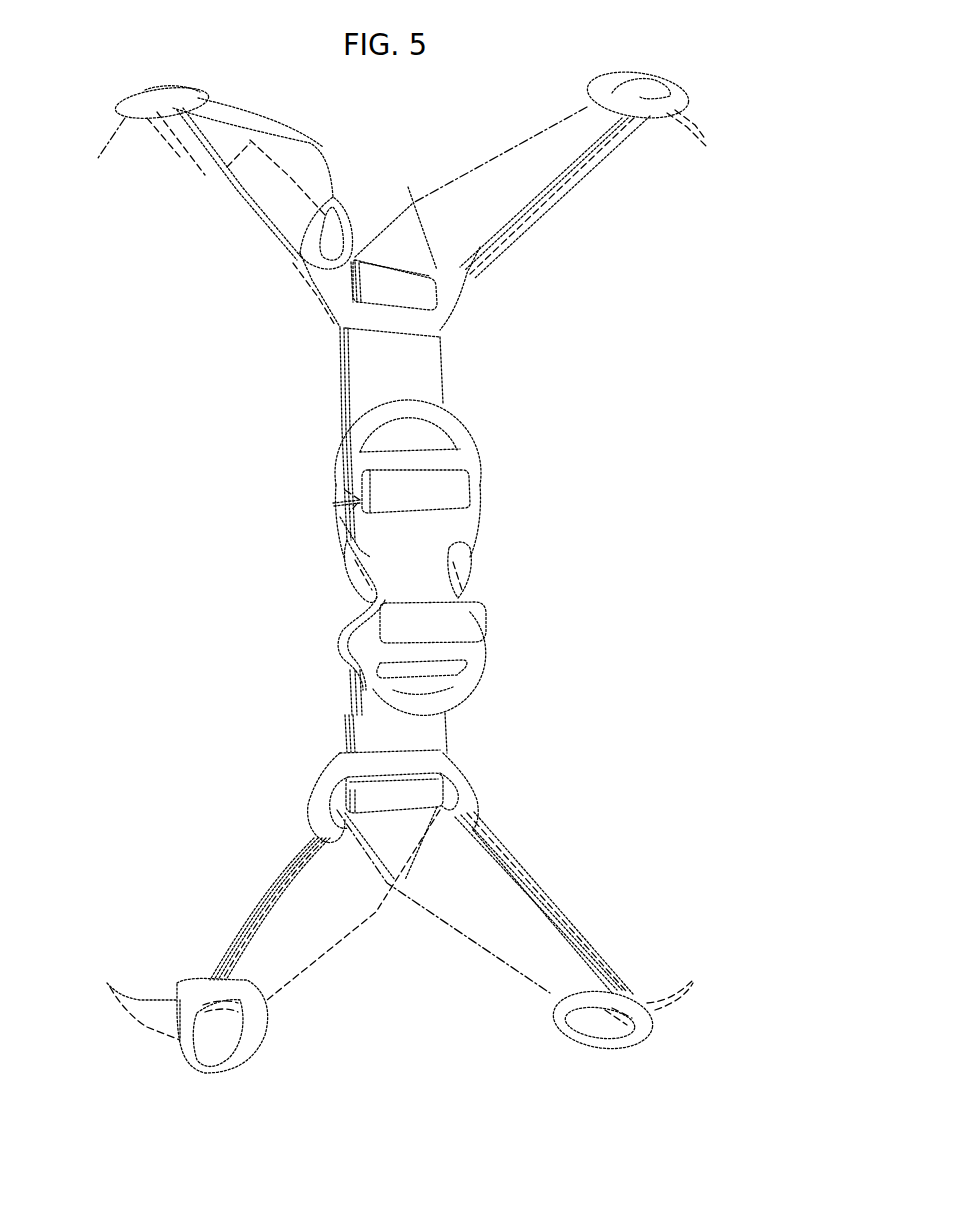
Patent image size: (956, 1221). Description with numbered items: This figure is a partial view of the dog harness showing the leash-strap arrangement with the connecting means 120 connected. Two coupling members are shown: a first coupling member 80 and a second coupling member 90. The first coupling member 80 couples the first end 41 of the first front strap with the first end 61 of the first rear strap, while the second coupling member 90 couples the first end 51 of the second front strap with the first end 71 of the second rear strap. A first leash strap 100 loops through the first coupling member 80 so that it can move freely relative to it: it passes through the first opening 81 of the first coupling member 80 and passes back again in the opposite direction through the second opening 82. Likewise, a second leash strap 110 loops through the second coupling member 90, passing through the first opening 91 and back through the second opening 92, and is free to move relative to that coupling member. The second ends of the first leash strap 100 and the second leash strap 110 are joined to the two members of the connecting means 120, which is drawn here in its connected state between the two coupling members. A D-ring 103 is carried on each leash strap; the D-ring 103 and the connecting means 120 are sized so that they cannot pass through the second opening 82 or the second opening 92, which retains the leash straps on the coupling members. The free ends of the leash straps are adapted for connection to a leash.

The first end of the first front strap 41 is at (257, 930).
The first end of the second front strap 51 is at (255, 188).
The first end of the first rear strap 61 is at (527, 927).
The first end of the second rear strap 71 is at (513, 187).
The first coupling member 80 is at (307, 818).
The first opening of the first coupling member 81 is at (387, 852).
The second opening of the first coupling member 82 is at (343, 788).
The second coupling member 90 is at (313, 263).
The first opening of the second coupling member 91 is at (408, 257).
The second opening of the second coupling member 92 is at (347, 293).
The first leash strap 100 is at (360, 728).
The D-ring 103 is at (463, 450).
The second leash strap 110 is at (427, 375).
The connecting means 120 is at (425, 563).